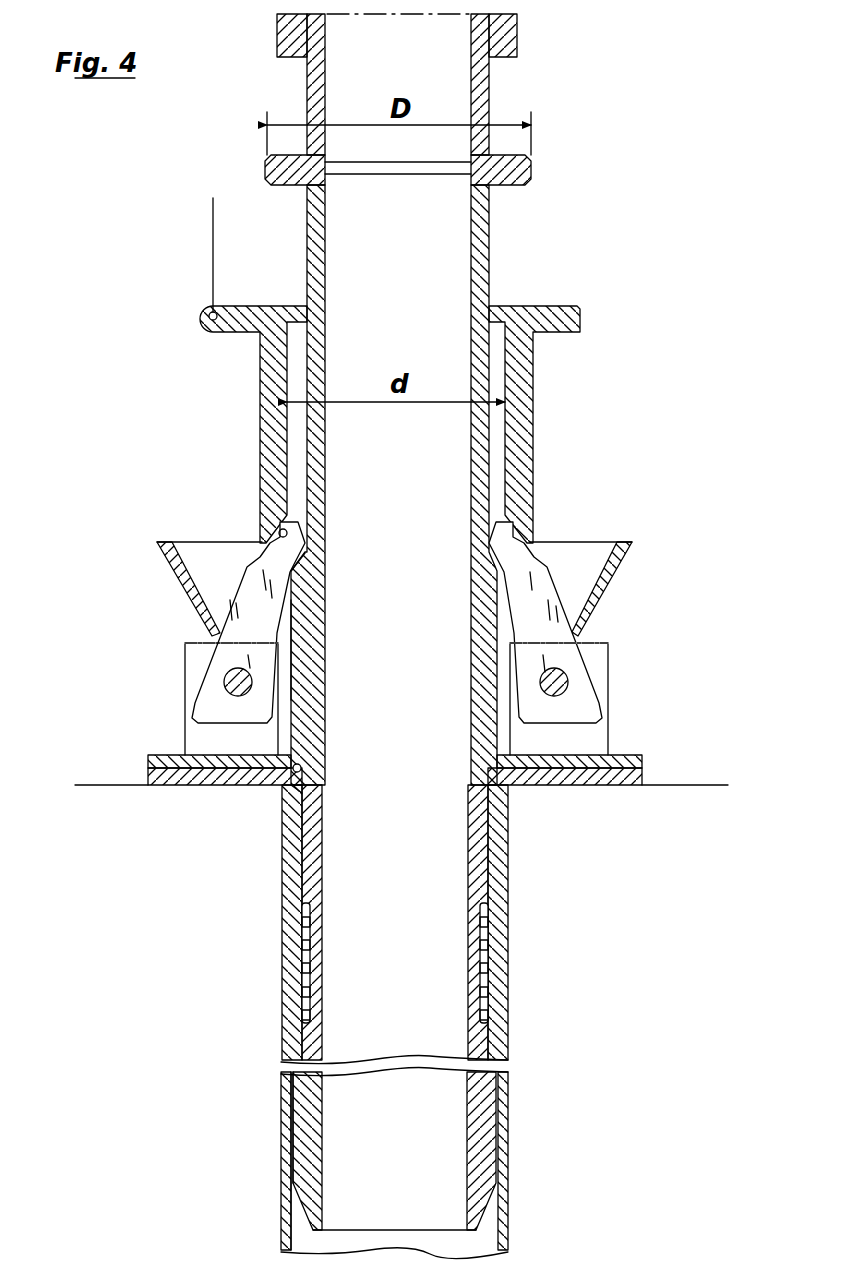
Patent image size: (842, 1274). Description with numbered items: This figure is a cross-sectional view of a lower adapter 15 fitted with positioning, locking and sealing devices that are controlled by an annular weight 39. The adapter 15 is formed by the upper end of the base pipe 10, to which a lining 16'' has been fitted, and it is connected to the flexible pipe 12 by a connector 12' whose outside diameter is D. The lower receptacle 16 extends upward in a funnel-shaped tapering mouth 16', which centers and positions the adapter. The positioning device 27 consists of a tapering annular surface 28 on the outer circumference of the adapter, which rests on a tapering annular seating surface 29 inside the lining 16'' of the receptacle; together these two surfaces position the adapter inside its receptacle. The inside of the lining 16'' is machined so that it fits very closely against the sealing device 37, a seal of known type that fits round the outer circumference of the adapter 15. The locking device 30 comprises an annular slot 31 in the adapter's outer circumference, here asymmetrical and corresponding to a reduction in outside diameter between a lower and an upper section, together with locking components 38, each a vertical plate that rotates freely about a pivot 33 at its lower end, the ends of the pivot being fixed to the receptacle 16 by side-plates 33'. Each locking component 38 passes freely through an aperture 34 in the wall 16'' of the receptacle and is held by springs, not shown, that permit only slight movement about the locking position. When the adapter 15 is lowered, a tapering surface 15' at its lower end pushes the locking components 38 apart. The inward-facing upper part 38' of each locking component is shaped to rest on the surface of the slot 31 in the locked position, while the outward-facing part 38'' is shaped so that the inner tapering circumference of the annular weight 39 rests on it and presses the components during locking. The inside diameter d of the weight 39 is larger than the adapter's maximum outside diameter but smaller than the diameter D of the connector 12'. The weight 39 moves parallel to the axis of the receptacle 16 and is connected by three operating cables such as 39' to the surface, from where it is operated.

The base pipe 10 is at (288, 1230).
The flexible pipe 12 is at (433, 84).
The connector 12' is at (359, 169).
The lower adapter 15 is at (339, 1151).
The tapering surface 15' is at (241, 1161).
The lower receptacle 16 is at (335, 922).
The mouth 16' is at (363, 585).
The lining 16'' is at (349, 1061).
The positioning device 27 is at (280, 808).
The tapering annular surface 28 is at (304, 767).
The tapering annular seating surface 29 is at (298, 793).
The locking device 30 is at (158, 616).
The annular slot 31 is at (297, 478).
The pivot 33 is at (338, 689).
The side-plates 33' is at (375, 705).
The aperture 34 is at (288, 637).
The sealing device 37 is at (305, 983).
The locking component 38 is at (351, 622).
The part of locking component 38' is at (344, 569).
The part of locking component 38'' is at (225, 509).
The annular weight 39 is at (370, 424).
The operating cable 39' is at (181, 255).